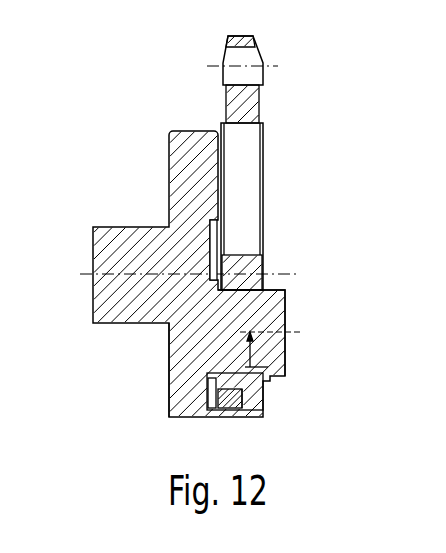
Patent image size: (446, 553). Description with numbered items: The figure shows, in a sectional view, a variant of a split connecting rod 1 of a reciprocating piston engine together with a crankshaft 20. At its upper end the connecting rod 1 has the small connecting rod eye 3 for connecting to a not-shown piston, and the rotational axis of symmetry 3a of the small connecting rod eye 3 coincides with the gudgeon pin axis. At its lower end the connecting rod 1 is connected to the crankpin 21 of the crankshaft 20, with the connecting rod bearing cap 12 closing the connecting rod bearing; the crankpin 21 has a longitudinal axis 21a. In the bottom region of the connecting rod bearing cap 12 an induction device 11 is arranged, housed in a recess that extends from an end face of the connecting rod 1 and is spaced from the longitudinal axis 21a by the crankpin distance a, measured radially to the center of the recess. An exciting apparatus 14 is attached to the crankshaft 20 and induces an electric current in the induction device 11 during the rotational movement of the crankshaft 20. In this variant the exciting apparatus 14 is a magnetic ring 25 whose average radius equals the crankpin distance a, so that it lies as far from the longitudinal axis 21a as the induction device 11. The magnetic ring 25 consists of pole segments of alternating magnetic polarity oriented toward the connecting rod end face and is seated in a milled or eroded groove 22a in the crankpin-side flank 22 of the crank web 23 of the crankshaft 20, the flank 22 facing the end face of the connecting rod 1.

The connecting rod 1 is at (253, 155).
The small connecting rod eye 3 is at (230, 57).
The rotational axis of symmetry of the small connecting rod eye 3a is at (272, 66).
The crankshaft 20 is at (92, 310).
The crankpin 21 is at (274, 289).
The longitudinal axis of the crankpin 21a is at (293, 332).
The crankpin-side flank 22 is at (226, 190).
The groove 22a is at (225, 233).
The crank web 23 is at (182, 381).
The magnetic ring 25 is at (215, 232).
The connecting rod bearing cap 12 is at (262, 400).
The induction device 11 is at (252, 404).
The exciting apparatus 14 is at (207, 394).
The crankpin distance a is at (285, 344).